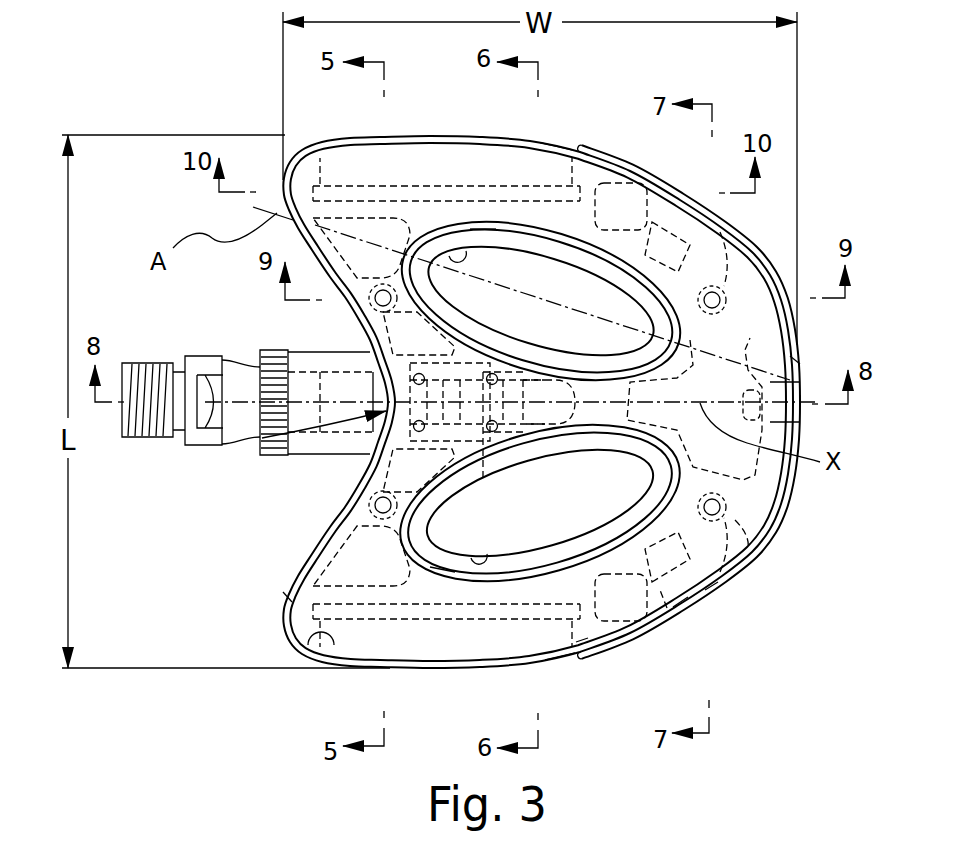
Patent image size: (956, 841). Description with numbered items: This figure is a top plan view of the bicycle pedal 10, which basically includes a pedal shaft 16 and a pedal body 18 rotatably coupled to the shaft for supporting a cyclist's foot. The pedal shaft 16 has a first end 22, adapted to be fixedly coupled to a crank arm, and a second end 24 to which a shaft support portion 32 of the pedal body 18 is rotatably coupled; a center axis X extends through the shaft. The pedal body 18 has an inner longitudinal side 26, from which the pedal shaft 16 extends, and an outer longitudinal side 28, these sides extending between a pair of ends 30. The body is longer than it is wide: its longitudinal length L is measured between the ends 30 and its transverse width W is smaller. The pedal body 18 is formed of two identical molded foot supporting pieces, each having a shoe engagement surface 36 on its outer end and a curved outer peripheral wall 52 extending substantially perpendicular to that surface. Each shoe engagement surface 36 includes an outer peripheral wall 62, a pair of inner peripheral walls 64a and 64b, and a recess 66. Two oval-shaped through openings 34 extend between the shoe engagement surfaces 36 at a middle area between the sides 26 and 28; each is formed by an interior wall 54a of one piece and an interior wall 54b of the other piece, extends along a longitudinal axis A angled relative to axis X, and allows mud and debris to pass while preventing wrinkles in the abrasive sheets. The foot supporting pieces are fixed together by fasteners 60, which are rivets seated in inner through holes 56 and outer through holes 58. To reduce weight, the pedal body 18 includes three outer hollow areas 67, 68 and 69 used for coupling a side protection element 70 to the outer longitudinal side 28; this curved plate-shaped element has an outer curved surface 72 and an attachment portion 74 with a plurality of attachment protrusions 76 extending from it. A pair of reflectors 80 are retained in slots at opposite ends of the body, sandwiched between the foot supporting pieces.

The bicycle pedal 10 is at (240, 93).
The pedal shaft 16 is at (201, 455).
The pedal body 18 is at (584, 140).
The first end 22 is at (145, 437).
The second end 24 is at (487, 480).
The inner longitudinal side 26 is at (300, 458).
The outer longitudinal side 28 is at (799, 488).
The ends 30 is at (558, 138).
The shaft support portion 32 is at (323, 458).
The through openings 34 is at (497, 253).
The shoe engagement surfaces 36 is at (748, 548).
The curved outer peripheral wall 52 is at (582, 641).
The interior wall 54a is at (478, 558).
The interior wall 54b is at (448, 253).
The inner through holes 56 is at (368, 300).
The outer through holes 58 is at (728, 300).
The fasteners 60 is at (375, 312).
The outer peripheral wall 62 is at (287, 597).
The inner peripheral wall 64a is at (440, 565).
The inner peripheral wall 64b is at (483, 228).
The recess 66 is at (317, 636).
The outer hollow area 67 is at (667, 608).
The outer hollow area 68 is at (796, 362).
The outer hollow area 69 is at (630, 289).
The side protection element 70 is at (712, 587).
The outer curved surface 72 is at (682, 601).
The attachment portion 74 is at (798, 437).
The attachment protrusions 76 is at (652, 235).
The reflectors 80 is at (407, 190).